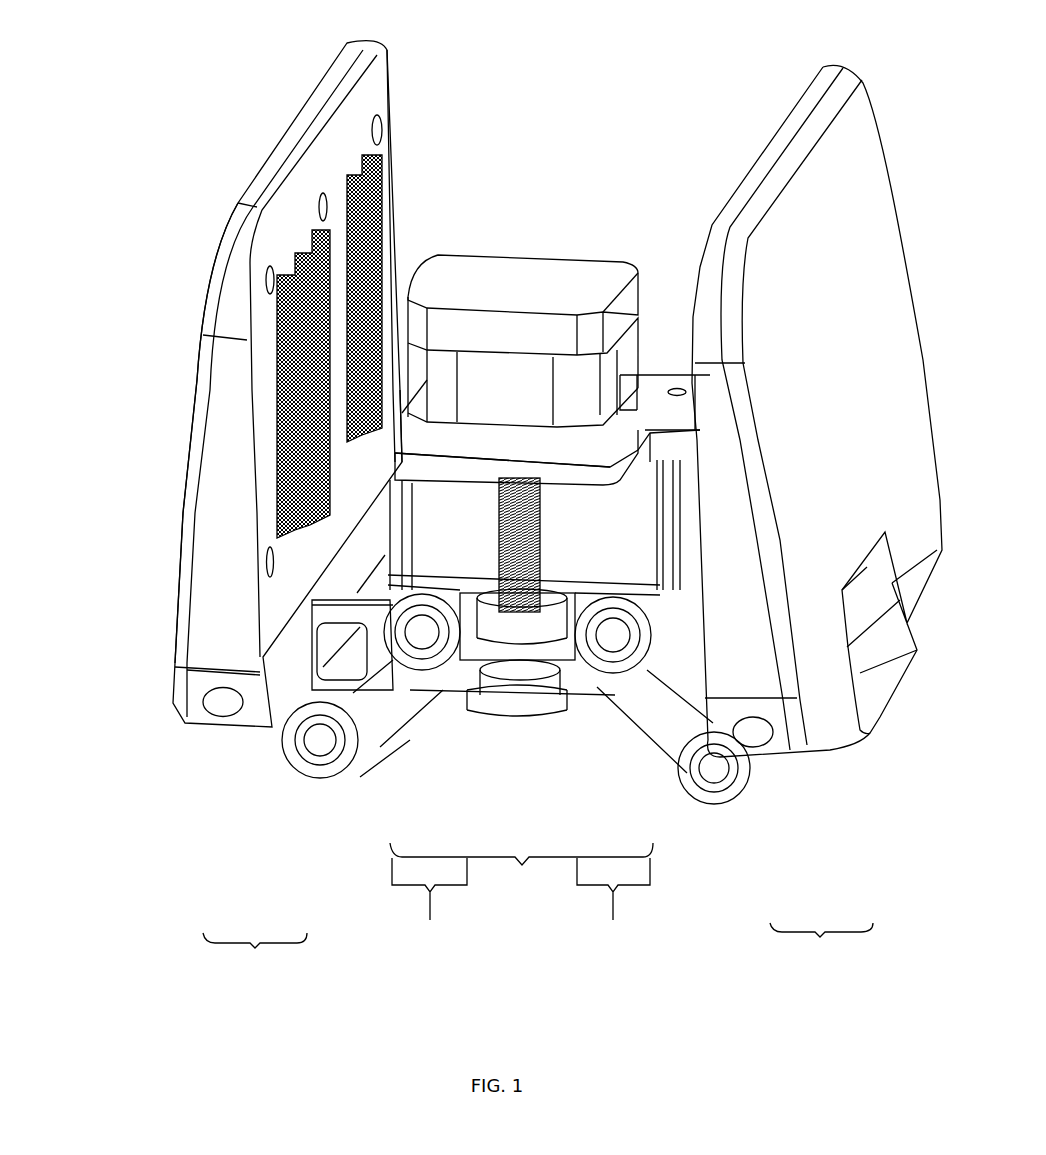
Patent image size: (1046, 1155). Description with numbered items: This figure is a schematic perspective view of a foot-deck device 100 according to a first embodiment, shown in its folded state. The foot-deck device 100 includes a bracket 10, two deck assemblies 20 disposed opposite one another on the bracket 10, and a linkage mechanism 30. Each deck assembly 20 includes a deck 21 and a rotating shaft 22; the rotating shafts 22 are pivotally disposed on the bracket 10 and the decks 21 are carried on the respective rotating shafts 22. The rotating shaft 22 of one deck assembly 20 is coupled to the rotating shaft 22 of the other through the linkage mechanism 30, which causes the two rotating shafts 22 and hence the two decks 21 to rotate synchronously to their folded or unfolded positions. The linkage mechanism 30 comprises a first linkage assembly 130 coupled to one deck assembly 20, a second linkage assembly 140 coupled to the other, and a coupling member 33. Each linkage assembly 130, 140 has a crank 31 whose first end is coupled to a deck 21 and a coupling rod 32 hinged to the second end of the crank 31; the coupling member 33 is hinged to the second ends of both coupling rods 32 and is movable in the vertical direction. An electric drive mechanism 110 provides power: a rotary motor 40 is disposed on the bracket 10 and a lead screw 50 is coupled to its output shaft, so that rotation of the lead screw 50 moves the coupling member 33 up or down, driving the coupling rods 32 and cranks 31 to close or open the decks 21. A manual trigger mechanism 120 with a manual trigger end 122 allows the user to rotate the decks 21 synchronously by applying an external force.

The foot-deck device 100 is at (590, 105).
The electric drive mechanism 110 is at (603, 150).
The manual trigger mechanism 120 is at (108, 243).
The manual trigger end 122 is at (223, 288).
The bracket 10 is at (648, 373).
The rotary motor 40 is at (523, 272).
The lead screw 50 is at (510, 490).
The linkage mechanism 30 is at (521, 879).
The crank 31 is at (358, 745).
The coupling rod 32 is at (400, 703).
The coupling member 33 is at (513, 637).
The deck assembly 20 is at (538, 956).
The deck 21 is at (821, 680).
The rotating shaft 22 is at (232, 704).
The first linkage assembly 130 is at (429, 911).
The second linkage assembly 140 is at (613, 911).